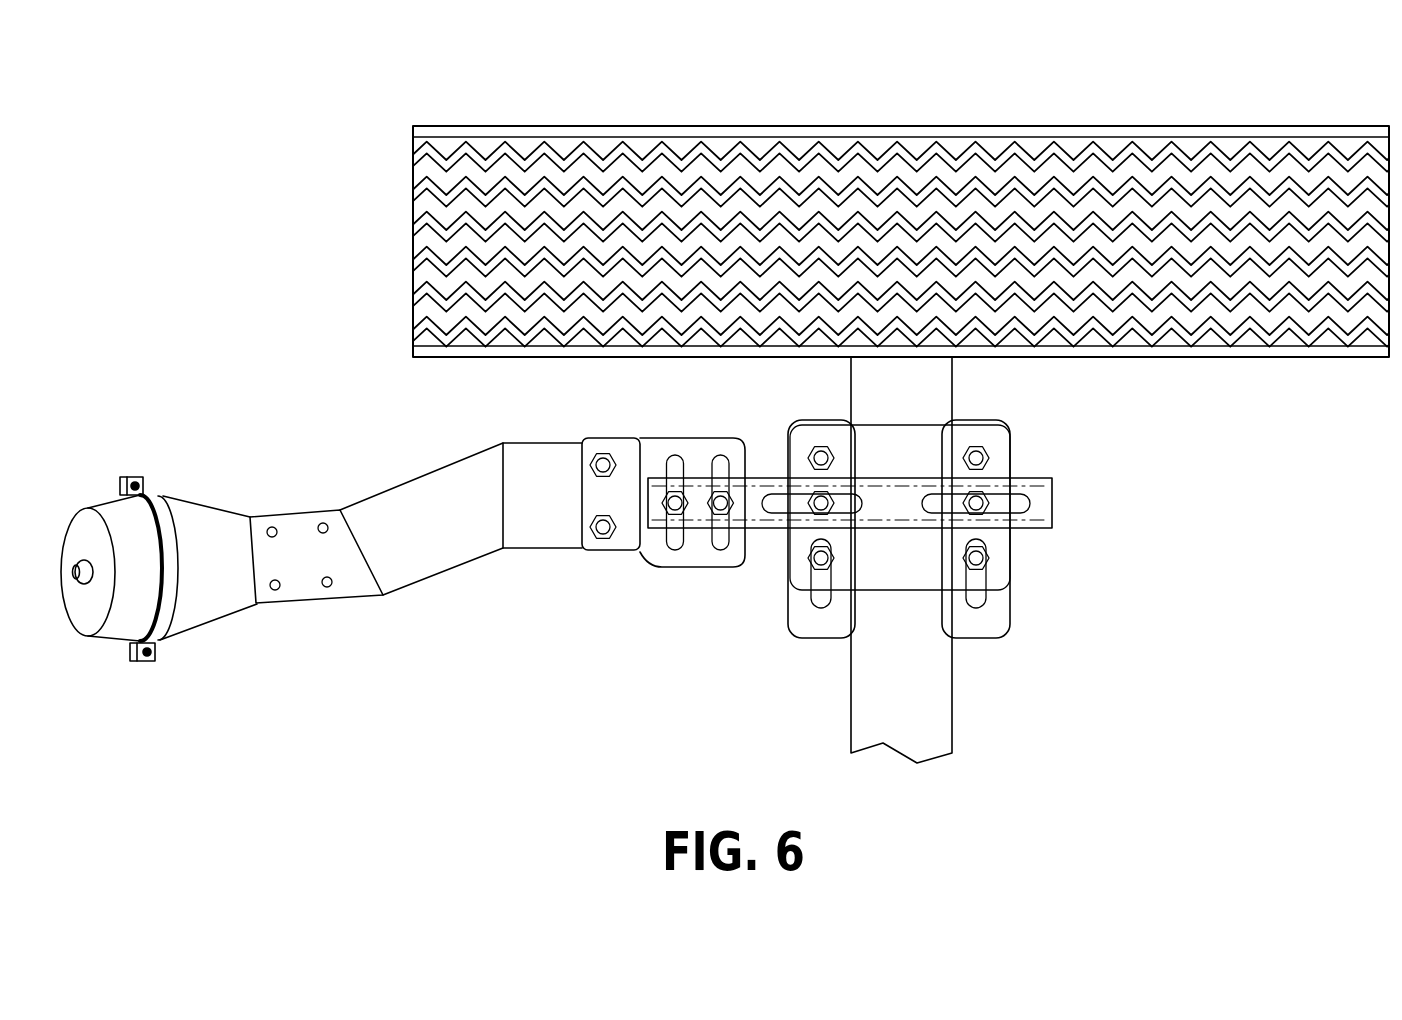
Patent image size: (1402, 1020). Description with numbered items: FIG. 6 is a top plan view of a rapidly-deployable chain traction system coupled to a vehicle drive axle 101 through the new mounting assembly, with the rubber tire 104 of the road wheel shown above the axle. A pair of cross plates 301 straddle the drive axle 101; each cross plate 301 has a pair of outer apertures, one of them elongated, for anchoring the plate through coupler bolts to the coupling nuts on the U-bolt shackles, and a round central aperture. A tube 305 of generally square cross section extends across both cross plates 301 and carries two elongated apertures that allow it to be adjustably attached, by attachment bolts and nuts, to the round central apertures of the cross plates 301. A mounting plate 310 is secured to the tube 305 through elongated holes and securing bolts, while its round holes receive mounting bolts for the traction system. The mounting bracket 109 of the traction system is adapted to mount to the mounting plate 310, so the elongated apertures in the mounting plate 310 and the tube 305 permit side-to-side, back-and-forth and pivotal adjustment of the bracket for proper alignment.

The rubber tire 104 is at (425, 168).
The drive axle 101 is at (900, 690).
The cross plate 301 is at (805, 622).
The tube 305 is at (1043, 503).
The mounting plate 310 is at (697, 557).
The mounting bracket 109 is at (440, 483).